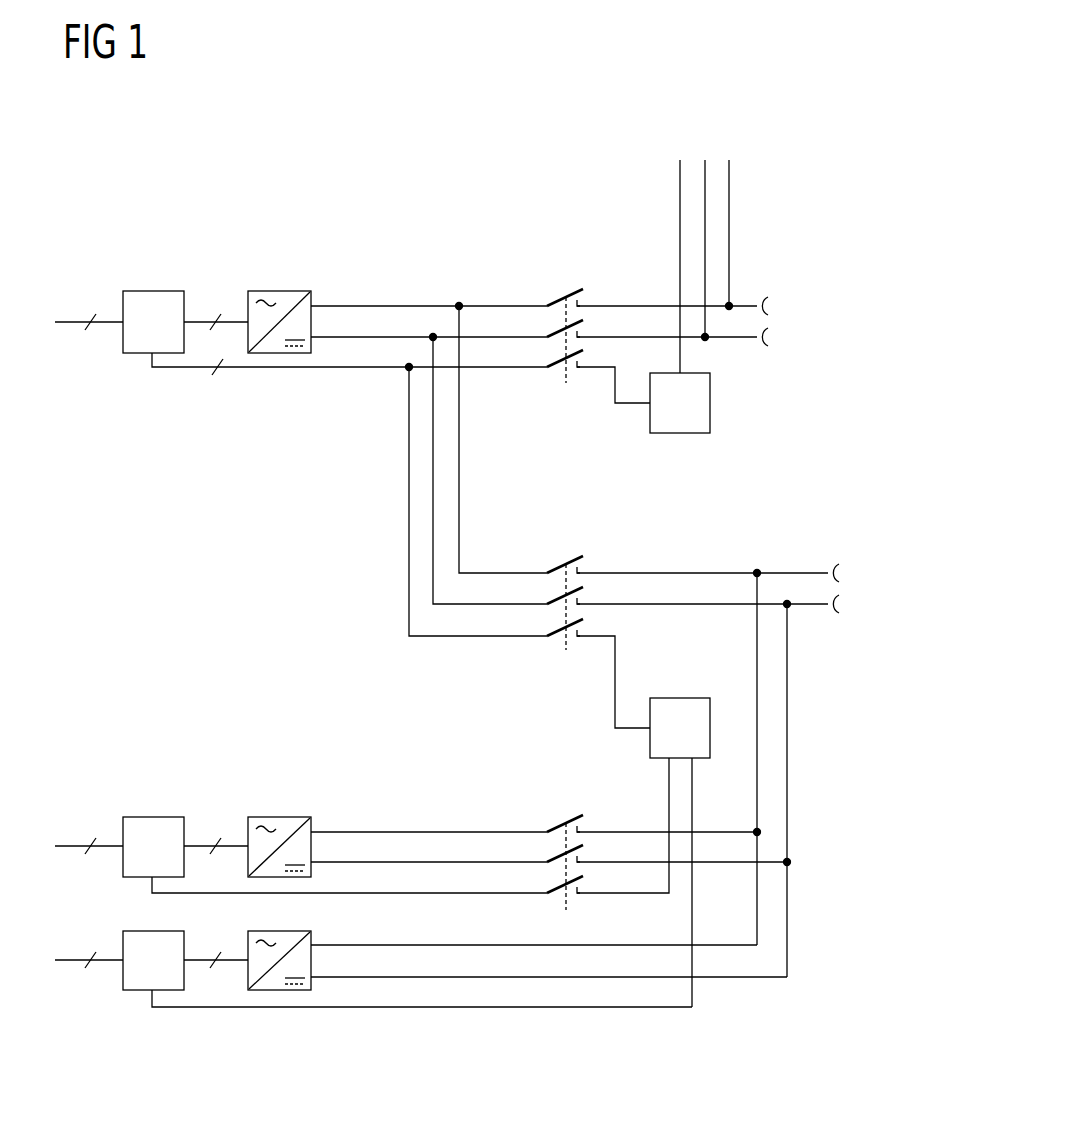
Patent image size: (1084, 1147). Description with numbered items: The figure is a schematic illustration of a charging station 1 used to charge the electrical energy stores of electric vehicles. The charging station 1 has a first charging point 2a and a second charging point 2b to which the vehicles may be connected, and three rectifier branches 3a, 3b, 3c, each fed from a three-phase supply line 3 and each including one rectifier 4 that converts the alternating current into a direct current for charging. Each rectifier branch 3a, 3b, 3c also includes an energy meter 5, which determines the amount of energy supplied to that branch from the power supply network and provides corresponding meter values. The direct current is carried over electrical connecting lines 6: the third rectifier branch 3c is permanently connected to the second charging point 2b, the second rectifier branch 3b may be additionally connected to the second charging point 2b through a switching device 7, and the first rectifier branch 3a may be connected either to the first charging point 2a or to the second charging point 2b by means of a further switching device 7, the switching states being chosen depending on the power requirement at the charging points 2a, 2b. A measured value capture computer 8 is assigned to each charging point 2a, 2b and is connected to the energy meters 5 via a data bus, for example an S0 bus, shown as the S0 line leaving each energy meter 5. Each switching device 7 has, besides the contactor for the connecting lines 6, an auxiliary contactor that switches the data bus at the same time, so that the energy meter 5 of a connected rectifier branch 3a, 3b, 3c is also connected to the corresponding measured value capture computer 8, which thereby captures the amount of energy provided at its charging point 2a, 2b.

The charging station 1 is at (402, 122).
The first charging point 2a is at (793, 317).
The second charging point 2b is at (863, 585).
The supply line / power input 3 is at (151, 622).
The first rectifier branch 3a is at (302, 258).
The second rectifier branch 3b is at (302, 785).
The third rectifier branch 3c is at (305, 1012).
The rectifier 4 is at (280, 291).
The energy meter 5 is at (152, 291).
The electrical connecting lines 6 is at (459, 422).
The switching device 7 is at (558, 280).
The measured value capture computer 8 is at (710, 405).
The S0 bus S0 is at (349, 381).